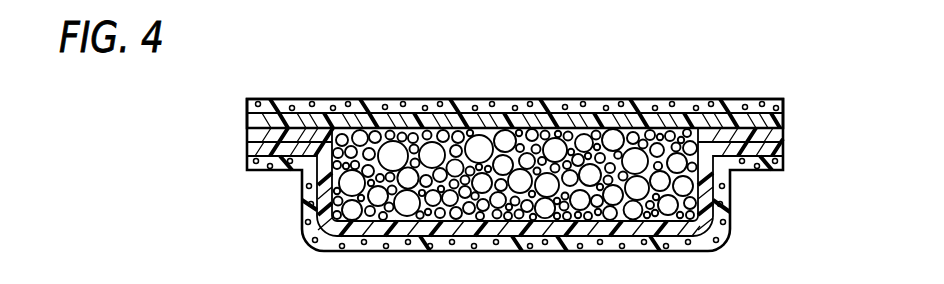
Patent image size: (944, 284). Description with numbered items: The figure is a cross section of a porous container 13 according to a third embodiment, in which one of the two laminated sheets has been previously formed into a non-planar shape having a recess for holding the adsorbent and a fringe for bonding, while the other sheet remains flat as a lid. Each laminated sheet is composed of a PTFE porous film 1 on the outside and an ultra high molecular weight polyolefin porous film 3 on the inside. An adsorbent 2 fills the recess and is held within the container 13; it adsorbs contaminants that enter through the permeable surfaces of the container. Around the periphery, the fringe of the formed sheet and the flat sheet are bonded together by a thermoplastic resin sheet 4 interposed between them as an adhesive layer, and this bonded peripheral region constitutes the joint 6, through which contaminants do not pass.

The PTFE porous film 1 is at (767, 99).
The adsorbent 2 is at (638, 160).
The ultra high molecular weight polyolefin porous film 3 is at (781, 118).
The thermoplastic resin sheet 4 is at (247, 138).
The joint 6 is at (273, 171).
The porous container 13 is at (496, 72).